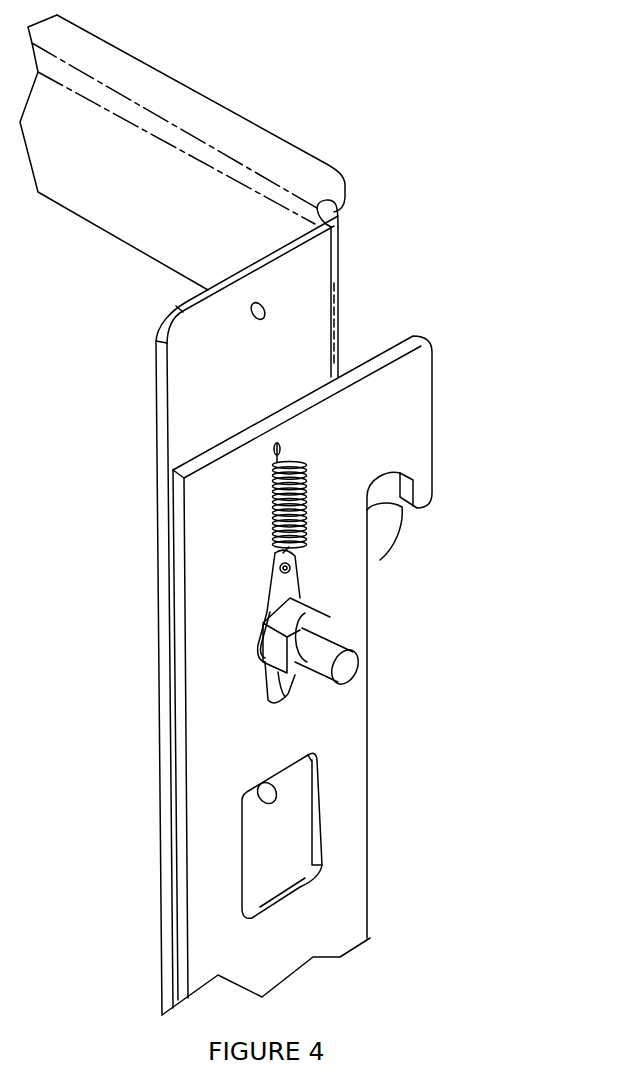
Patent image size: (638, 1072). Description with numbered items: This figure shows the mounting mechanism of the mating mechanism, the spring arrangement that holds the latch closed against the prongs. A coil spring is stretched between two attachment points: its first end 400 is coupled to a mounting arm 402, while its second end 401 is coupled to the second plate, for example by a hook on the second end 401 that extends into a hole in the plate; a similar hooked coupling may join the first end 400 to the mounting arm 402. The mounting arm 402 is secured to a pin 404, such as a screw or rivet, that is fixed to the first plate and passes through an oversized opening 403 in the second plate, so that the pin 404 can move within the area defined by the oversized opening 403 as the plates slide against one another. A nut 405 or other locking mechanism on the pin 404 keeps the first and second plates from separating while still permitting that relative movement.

The first end of the spring 400 is at (288, 570).
The second end of the spring 401 is at (277, 445).
The mounting arm 402 is at (293, 583).
The oversized opening 403 is at (273, 680).
The pin 404 is at (347, 673).
The nut 405 is at (320, 622).